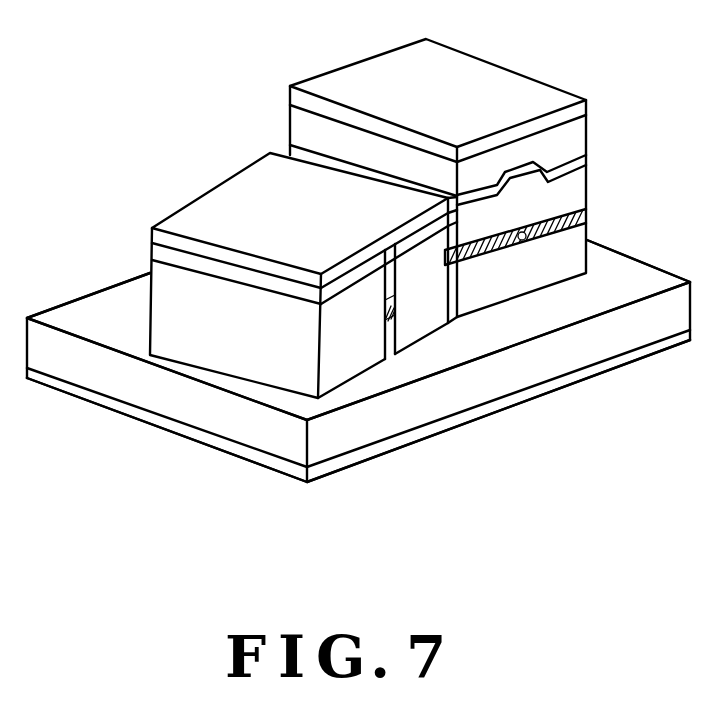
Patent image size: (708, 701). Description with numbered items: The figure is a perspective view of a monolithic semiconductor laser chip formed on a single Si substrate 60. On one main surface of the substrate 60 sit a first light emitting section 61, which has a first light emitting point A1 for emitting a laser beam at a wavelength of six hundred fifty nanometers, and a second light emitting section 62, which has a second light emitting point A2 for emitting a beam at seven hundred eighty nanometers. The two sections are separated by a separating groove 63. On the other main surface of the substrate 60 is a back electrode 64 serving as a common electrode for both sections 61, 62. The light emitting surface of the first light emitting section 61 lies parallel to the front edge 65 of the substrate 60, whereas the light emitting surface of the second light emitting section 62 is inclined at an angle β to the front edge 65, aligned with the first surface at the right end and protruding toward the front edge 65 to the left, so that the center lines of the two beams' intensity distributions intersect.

The Si substrate 60 is at (230, 425).
The first light emitting section 61 is at (565, 84).
The second light emitting section 62 is at (194, 189).
The separating groove 63 is at (282, 137).
The back electrode 64 is at (395, 451).
The front edge 65 is at (612, 315).
The first light emitting point A1 is at (531, 231).
The second light emitting point A2 is at (390, 304).